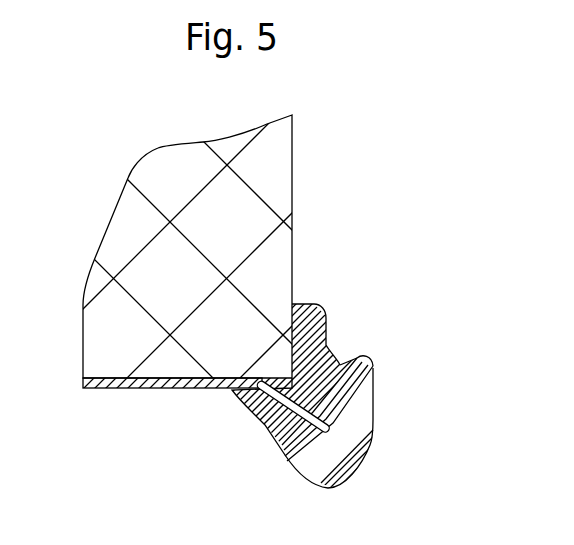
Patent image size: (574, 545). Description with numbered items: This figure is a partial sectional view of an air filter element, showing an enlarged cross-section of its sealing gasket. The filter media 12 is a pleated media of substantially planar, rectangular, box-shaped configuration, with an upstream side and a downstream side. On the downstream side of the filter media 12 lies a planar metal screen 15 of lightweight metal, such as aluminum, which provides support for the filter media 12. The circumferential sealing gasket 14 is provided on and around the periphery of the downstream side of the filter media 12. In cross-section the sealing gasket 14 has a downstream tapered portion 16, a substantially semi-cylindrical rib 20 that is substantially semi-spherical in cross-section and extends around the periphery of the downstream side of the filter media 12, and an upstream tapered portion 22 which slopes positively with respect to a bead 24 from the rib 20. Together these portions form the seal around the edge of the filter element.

The filter media 12 is at (306, 151).
The sealing gasket 14 is at (386, 424).
The planar metal screen 15 is at (117, 388).
The downstream tapered portion 16 is at (275, 440).
The semi-cylindrical rib 20 is at (373, 365).
The upstream tapered portion 22 is at (340, 364).
The bead 24 is at (311, 304).